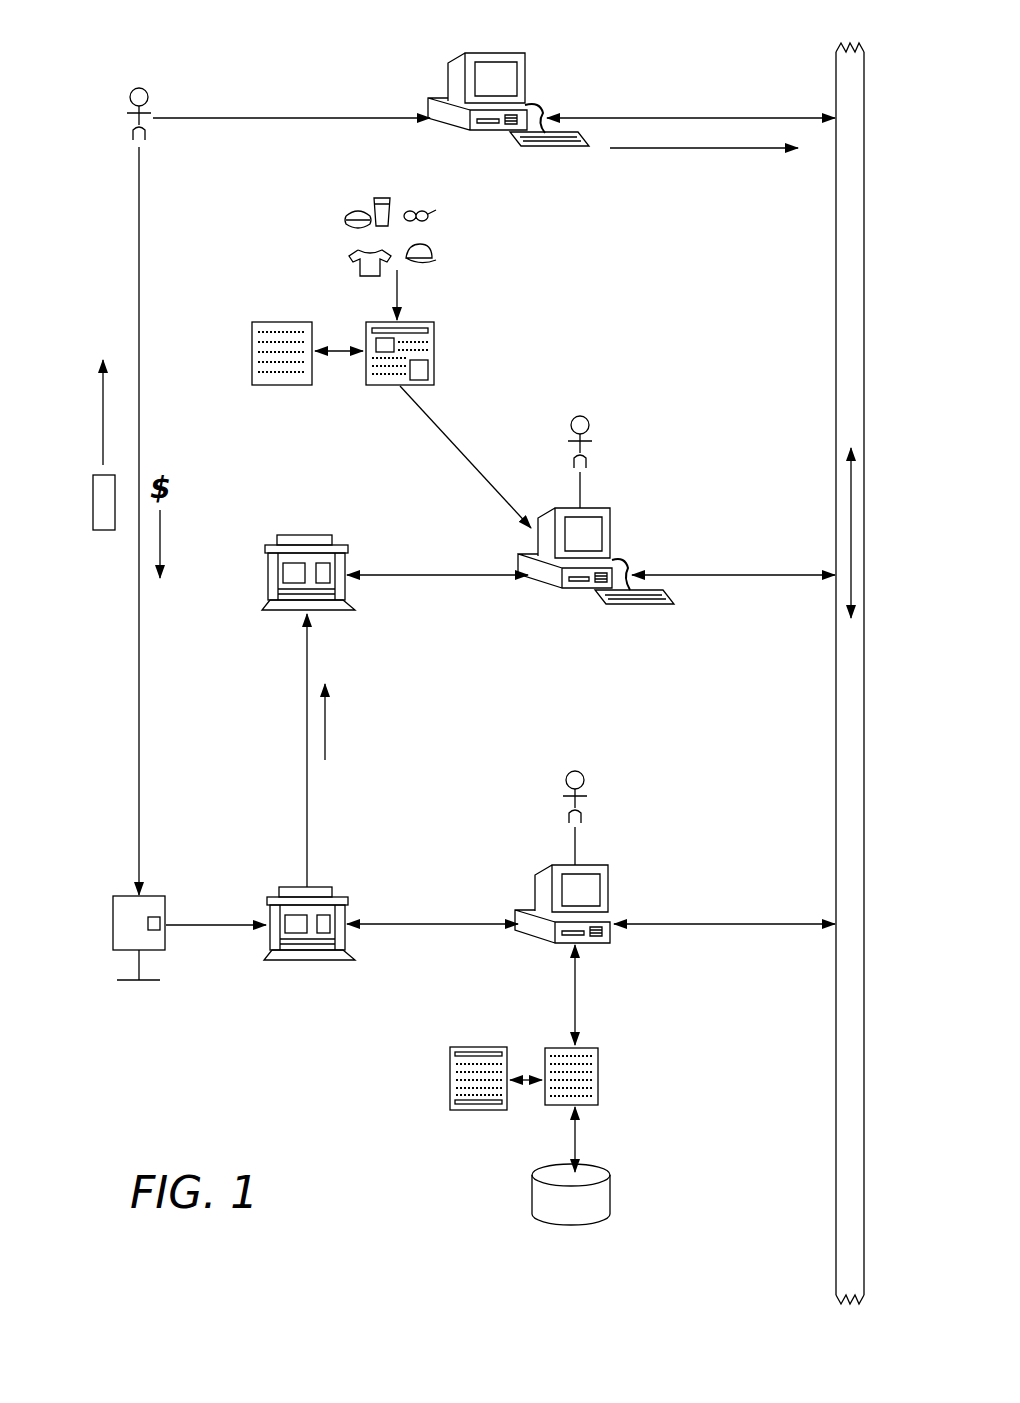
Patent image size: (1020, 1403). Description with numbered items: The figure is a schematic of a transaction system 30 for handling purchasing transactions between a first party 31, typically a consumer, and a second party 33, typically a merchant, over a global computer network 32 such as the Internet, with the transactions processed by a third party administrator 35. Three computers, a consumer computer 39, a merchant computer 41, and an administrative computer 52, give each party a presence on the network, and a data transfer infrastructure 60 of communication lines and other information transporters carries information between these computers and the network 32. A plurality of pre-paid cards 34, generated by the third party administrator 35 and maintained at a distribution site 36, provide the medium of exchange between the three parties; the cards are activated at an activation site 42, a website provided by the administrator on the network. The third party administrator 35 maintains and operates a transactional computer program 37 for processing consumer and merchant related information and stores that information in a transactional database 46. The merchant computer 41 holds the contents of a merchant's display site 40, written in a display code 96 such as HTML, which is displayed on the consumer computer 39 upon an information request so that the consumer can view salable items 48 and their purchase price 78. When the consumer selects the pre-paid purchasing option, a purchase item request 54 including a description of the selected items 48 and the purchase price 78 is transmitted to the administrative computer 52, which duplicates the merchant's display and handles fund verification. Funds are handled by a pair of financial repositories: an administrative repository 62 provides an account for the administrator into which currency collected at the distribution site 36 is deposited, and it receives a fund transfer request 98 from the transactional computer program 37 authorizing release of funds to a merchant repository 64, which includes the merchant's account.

The transaction system 30 is at (267, 86).
The first party 31 is at (148, 92).
The global computer network 32 is at (868, 156).
The second party 33 is at (589, 418).
The pre-paid cards 34 is at (93, 497).
The third party administrator 35 is at (582, 774).
The distribution site 36 is at (113, 908).
The transactional computer program 37 is at (598, 1072).
The consumer computer 39 is at (526, 70).
The merchant's display site 40 is at (434, 336).
The merchant computer 41 is at (612, 528).
The activation site 42 is at (450, 1070).
The transactional database 46 is at (612, 1194).
The salable items 48 is at (461, 231).
The administrative computer 52 is at (609, 882).
The purchase item request 54 is at (698, 178).
The data transfer infrastructure 60 is at (749, 116).
The administrative repository 62 is at (322, 888).
The merchant repository 64 is at (318, 535).
The purchase price 78 is at (377, 750).
The display code 96 is at (275, 322).
The fund transfer request 98 is at (445, 923).